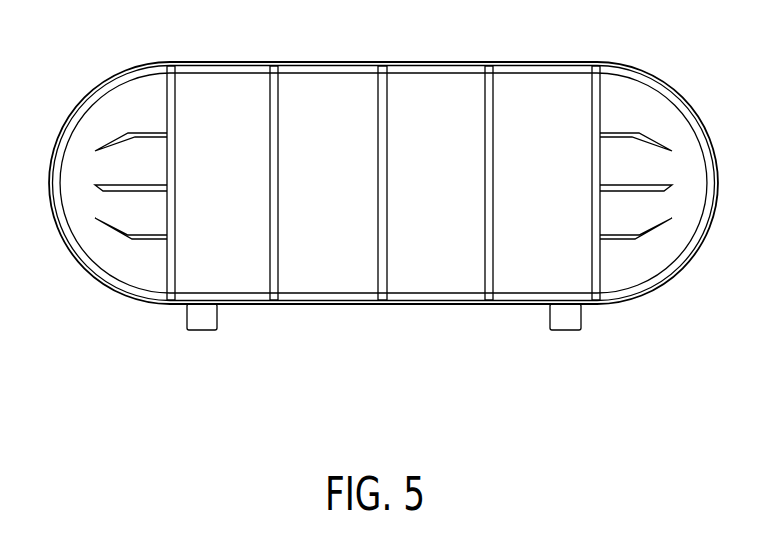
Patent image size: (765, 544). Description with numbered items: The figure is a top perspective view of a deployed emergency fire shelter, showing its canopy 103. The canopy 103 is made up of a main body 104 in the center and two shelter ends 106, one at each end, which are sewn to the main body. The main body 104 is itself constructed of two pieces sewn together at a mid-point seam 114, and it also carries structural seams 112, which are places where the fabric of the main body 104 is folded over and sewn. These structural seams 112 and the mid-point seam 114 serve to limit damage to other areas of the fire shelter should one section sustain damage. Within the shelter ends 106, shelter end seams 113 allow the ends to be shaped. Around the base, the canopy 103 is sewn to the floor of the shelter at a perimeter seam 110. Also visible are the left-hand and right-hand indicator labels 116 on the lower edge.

The canopy 103 is at (517, 405).
The main body 104 is at (443, 97).
The shelter ends 106 is at (632, 108).
The perimeter seam 110 is at (528, 308).
The structural seams 112 is at (282, 252).
The shelter end seams 113 is at (148, 131).
The mid-point seam 114 is at (388, 252).
The hand indicator label 116 is at (218, 318).